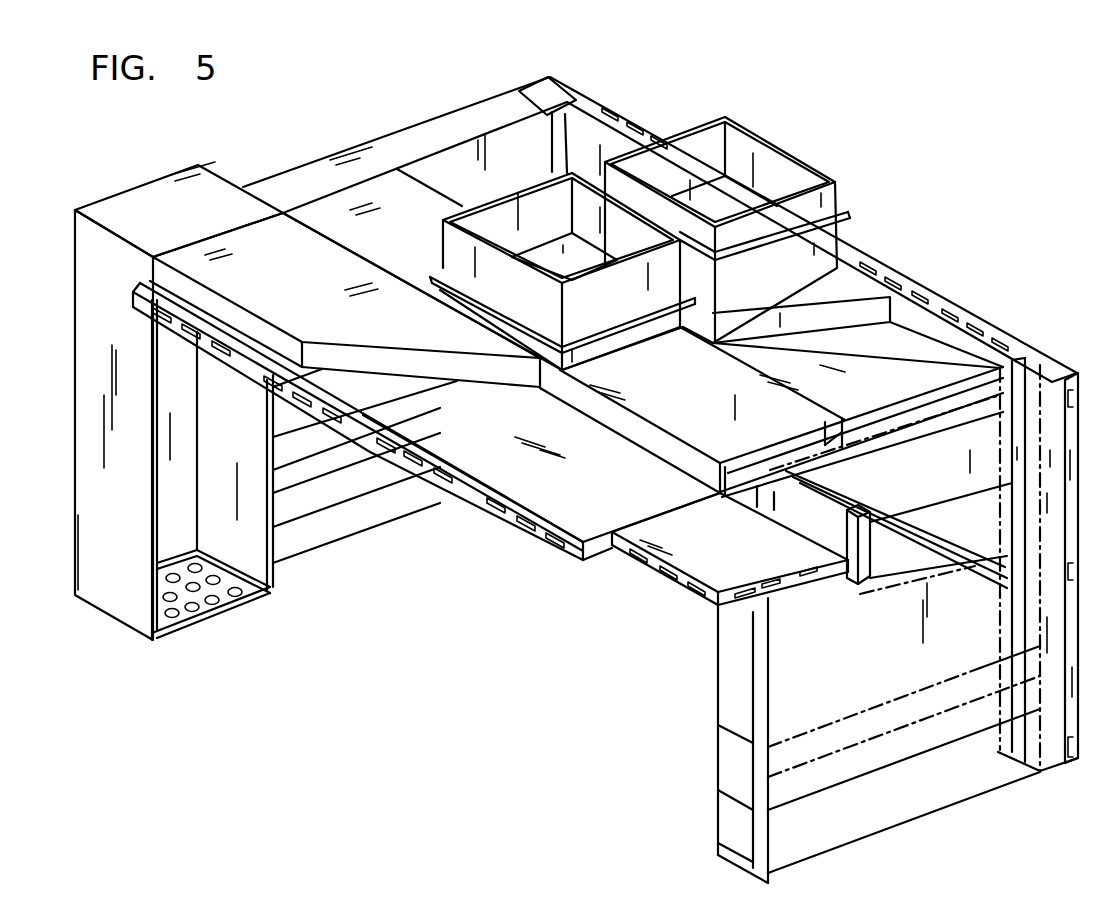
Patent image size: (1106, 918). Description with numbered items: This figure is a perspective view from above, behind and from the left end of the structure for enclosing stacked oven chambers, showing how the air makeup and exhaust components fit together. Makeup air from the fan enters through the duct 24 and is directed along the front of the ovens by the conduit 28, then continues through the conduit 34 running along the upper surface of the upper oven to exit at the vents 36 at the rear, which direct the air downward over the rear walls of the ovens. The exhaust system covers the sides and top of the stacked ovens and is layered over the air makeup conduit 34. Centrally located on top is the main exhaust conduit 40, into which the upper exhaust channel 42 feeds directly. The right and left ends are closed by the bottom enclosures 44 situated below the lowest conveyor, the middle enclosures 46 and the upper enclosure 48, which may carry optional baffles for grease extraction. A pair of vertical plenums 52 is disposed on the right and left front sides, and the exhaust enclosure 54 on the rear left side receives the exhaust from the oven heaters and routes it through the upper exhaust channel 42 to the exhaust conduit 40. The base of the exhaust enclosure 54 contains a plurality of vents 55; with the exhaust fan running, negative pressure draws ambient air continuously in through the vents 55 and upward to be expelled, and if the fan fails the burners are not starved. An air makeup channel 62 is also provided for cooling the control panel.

The duct 24 is at (754, 282).
The conduit 28 is at (973, 313).
The conduit 34 is at (473, 434).
The vent 36 is at (358, 443).
The exhaust conduit 40 is at (588, 302).
The upper exhaust channel 42 is at (371, 227).
The bottom enclosure 44 is at (324, 501).
The middle enclosure 46 is at (287, 456).
The upper enclosure 48 is at (423, 140).
The vertical plenum 52 is at (545, 93).
The exhaust enclosure 54 is at (150, 192).
The vents 55 is at (211, 611).
The air makeup channel 62 is at (702, 552).